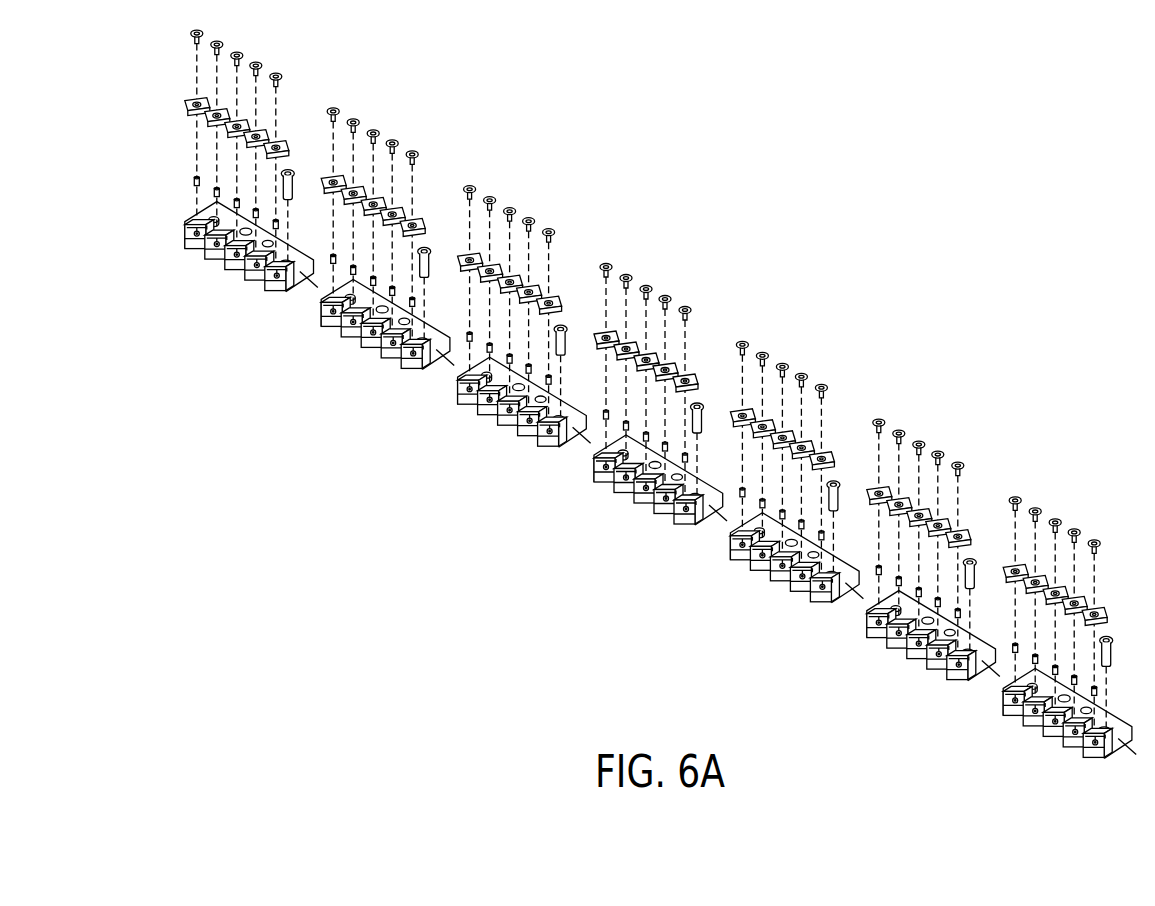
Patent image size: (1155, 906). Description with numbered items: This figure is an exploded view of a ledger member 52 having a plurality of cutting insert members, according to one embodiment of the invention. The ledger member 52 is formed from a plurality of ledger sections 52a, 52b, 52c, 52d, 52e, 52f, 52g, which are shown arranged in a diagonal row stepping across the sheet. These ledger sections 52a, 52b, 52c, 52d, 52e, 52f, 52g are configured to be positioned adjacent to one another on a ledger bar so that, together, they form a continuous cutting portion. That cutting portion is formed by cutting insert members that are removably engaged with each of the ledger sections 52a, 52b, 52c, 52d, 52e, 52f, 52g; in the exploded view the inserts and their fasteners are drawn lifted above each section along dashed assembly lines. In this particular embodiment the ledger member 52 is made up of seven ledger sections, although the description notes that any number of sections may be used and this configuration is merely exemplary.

The ledger member 52 is at (660, 410).
The ledger section 52a is at (237, 266).
The ledger section 52b is at (373, 343).
The ledger section 52c is at (510, 421).
The ledger section 52d is at (646, 499).
The ledger section 52e is at (782, 577).
The ledger section 52f is at (919, 655).
The ledger section 52g is at (1055, 732).